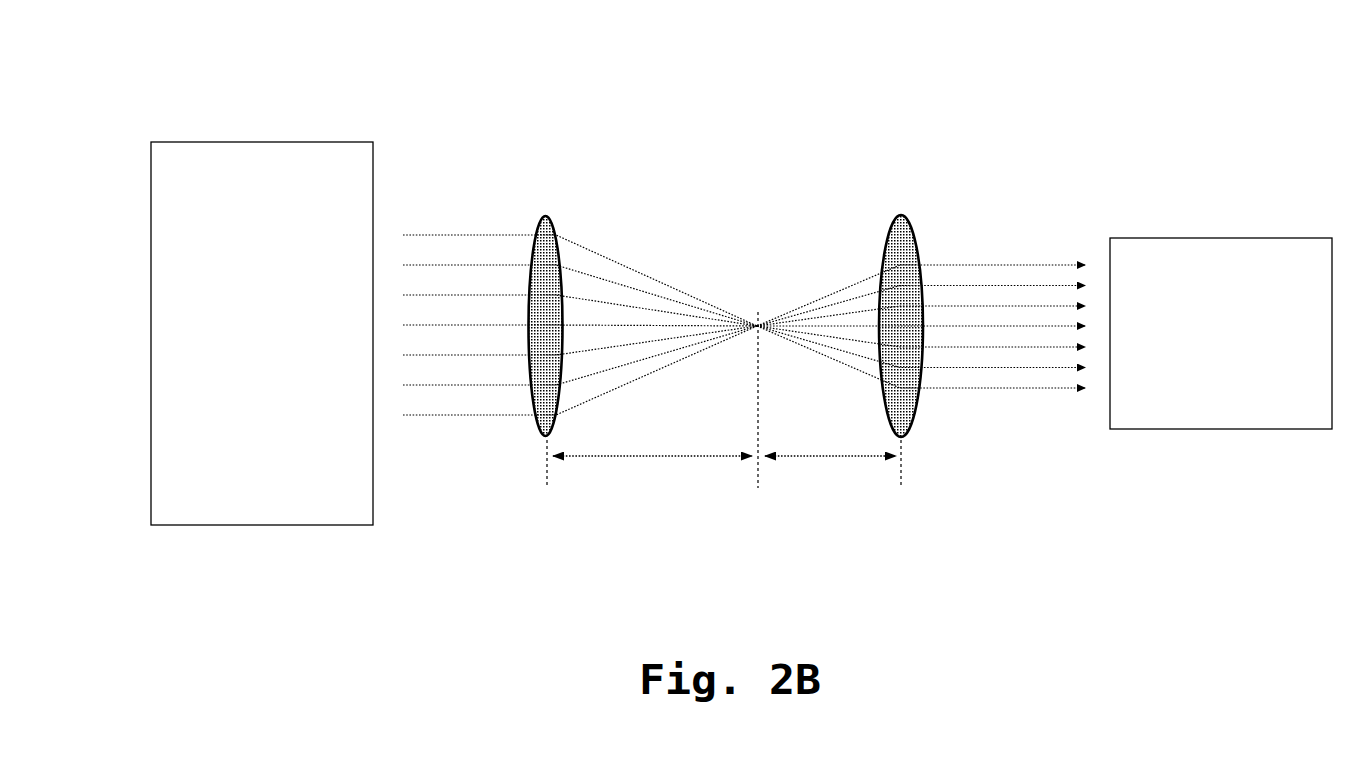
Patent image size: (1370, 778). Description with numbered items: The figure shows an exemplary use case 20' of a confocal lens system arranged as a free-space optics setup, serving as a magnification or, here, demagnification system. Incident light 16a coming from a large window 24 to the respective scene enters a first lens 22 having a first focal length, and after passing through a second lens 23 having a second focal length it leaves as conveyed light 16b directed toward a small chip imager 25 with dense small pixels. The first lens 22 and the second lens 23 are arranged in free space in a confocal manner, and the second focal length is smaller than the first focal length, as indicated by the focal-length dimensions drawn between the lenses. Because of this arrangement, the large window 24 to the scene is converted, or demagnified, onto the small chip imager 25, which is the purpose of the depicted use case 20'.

The use case of the confocal system 20' is at (744, 348).
The first lens 22 is at (545, 230).
The second lens 23 is at (897, 238).
The large window 24 is at (151, 142).
The small chip imager 25 is at (1110, 238).
The incident light 16a is at (460, 455).
The conveyed light 16b is at (1015, 415).